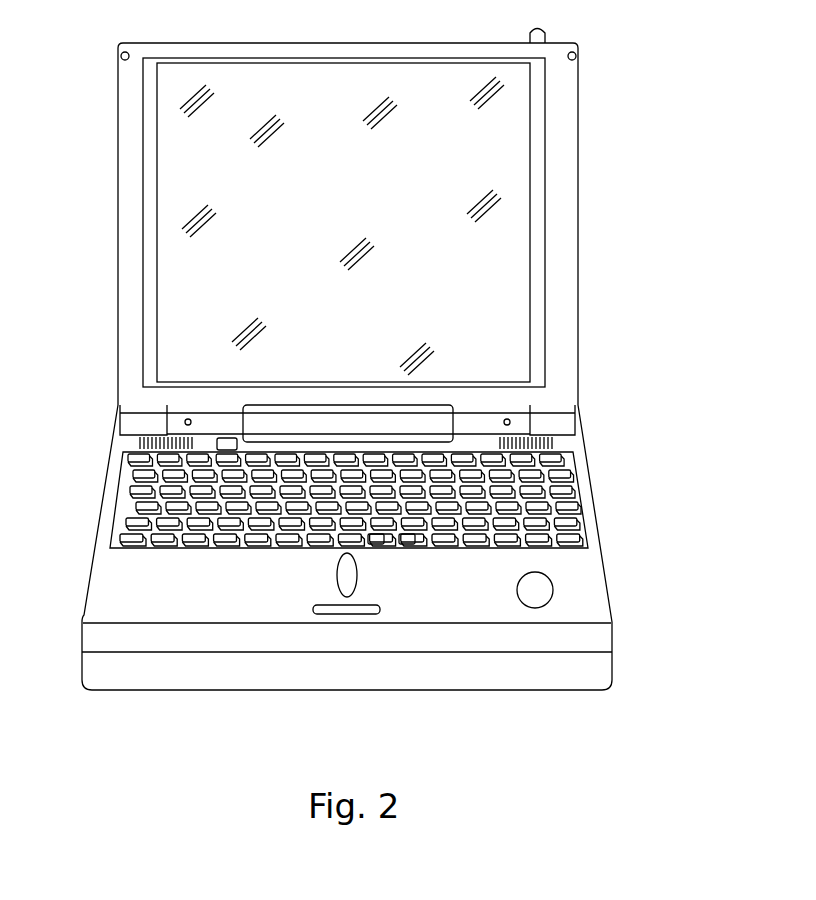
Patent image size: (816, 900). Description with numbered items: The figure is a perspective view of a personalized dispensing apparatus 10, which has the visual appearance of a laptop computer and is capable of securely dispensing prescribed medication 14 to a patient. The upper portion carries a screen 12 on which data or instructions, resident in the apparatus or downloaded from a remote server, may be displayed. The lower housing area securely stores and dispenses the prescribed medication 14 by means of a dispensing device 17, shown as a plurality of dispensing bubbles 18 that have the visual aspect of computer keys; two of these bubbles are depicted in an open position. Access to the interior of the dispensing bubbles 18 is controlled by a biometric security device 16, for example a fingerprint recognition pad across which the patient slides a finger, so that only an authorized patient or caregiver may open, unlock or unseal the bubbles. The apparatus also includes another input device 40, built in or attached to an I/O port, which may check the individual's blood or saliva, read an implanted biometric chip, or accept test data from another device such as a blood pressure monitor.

The dispensing apparatus 10 is at (84, 170).
The screen 12 is at (170, 278).
The prescribed medication 14 is at (97, 485).
The biometric security device 16 is at (337, 569).
The dispensing device 17 is at (373, 547).
The dispensing bubbles 18 is at (363, 614).
The input device 40 is at (552, 585).